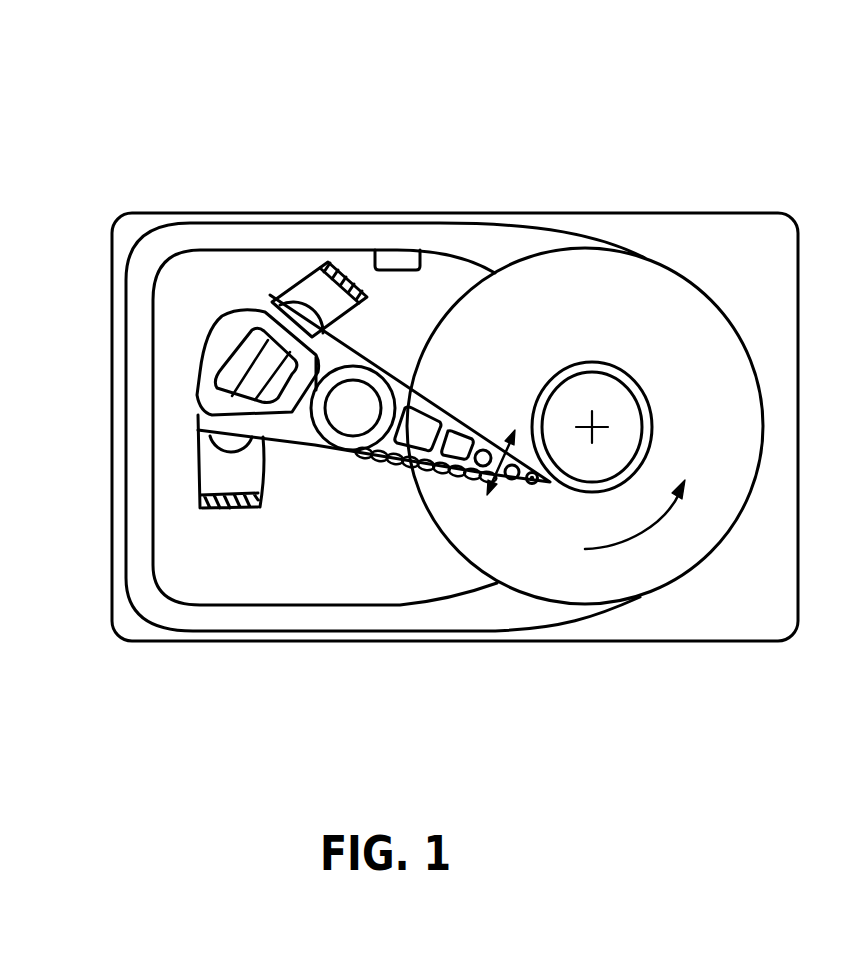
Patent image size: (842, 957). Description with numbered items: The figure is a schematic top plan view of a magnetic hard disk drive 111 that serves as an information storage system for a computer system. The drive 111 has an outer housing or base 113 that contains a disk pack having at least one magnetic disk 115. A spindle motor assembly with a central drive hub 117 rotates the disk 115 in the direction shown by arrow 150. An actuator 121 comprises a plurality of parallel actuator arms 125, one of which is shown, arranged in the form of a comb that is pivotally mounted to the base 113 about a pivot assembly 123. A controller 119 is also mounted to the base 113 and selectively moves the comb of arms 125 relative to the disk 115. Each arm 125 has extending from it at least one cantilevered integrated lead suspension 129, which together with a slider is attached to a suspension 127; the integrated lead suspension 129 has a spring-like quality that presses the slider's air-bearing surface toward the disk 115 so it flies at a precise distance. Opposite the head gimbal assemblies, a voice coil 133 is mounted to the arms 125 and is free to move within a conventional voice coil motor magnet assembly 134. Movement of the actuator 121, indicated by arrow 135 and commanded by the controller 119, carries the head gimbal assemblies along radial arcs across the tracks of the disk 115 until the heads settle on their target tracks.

The magnetic hard disk drive 111 is at (741, 130).
The base 113 is at (647, 213).
The magnetic disk 115 is at (678, 278).
The central drive hub 117 is at (627, 368).
The controller 119 is at (400, 270).
The actuator 121 is at (272, 518).
The pivot assembly 123 is at (345, 440).
The actuator arm 125 is at (412, 393).
The suspension 127 is at (458, 420).
The integrated lead suspension 129 is at (531, 486).
The voice coil 133 is at (224, 318).
The voice coil motor magnet assembly 134 is at (300, 289).
The arrow indicating actuator movement 135 is at (485, 499).
The arrow indicating disk rotation direction 150 is at (635, 547).